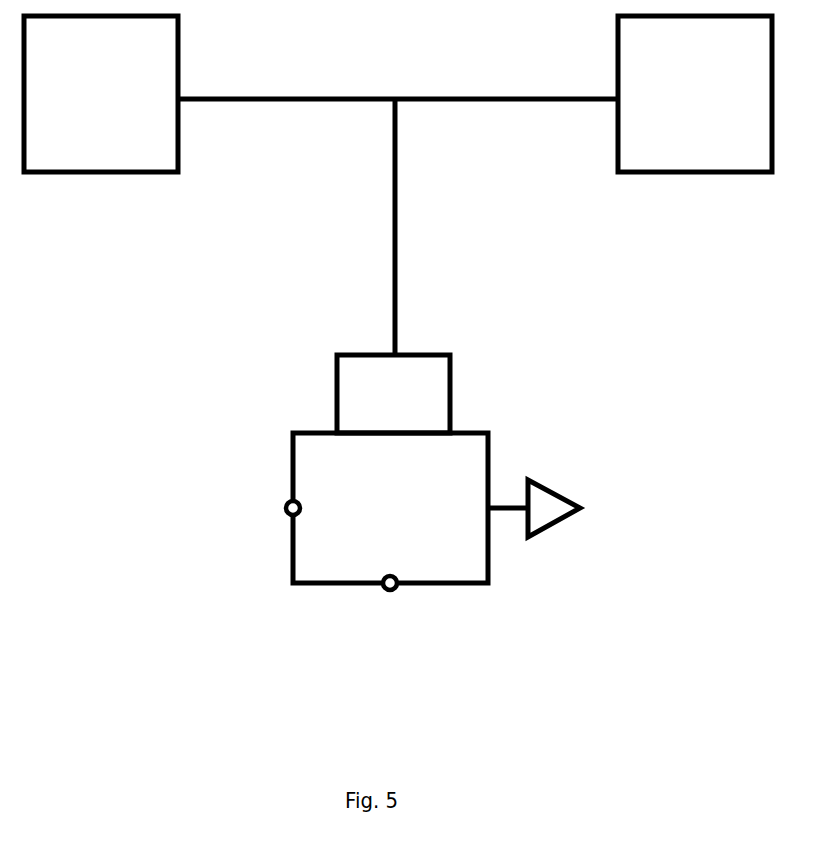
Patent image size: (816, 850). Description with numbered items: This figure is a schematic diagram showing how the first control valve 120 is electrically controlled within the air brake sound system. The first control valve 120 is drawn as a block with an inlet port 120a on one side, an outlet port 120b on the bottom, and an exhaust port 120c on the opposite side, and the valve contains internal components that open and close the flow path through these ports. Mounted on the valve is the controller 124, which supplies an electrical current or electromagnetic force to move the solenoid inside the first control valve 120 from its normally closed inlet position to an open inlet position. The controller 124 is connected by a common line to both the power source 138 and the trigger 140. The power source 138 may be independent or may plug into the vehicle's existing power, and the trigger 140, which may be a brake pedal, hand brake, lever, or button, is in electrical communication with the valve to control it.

The trigger 140 is at (101, 94).
The power source 138 is at (695, 94).
The controller 124 is at (393, 394).
The first control valve 120 is at (477, 430).
The inlet port 120a is at (287, 502).
The outlet port 120b is at (396, 590).
The exhaust port 120c is at (538, 480).